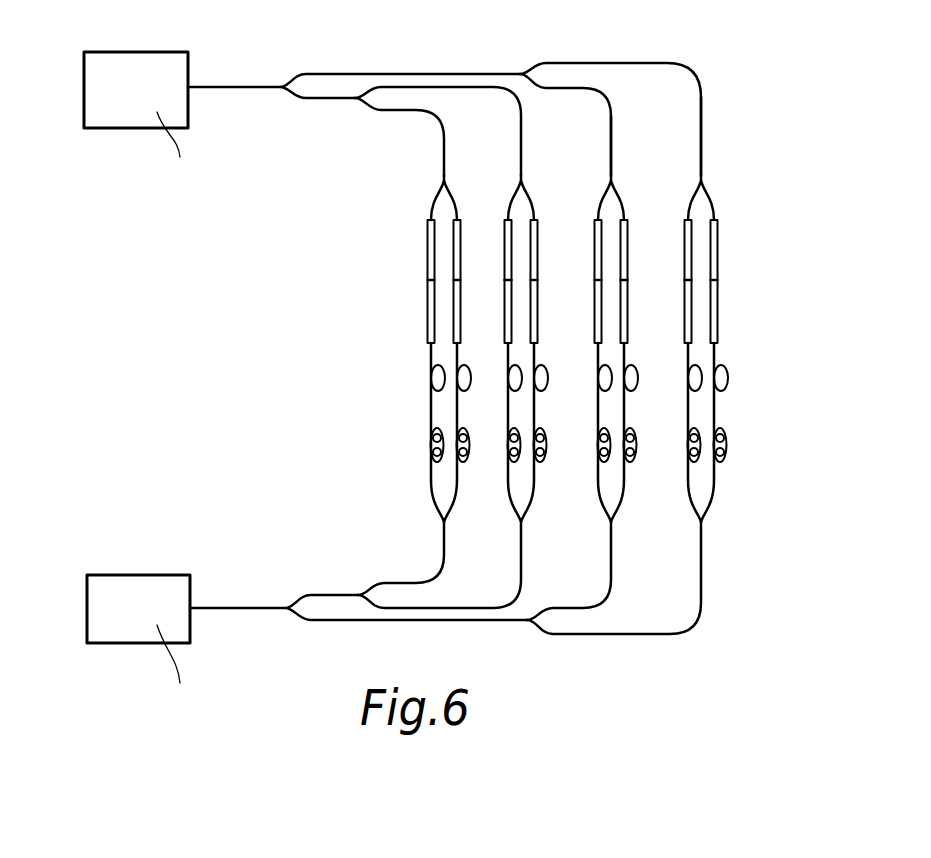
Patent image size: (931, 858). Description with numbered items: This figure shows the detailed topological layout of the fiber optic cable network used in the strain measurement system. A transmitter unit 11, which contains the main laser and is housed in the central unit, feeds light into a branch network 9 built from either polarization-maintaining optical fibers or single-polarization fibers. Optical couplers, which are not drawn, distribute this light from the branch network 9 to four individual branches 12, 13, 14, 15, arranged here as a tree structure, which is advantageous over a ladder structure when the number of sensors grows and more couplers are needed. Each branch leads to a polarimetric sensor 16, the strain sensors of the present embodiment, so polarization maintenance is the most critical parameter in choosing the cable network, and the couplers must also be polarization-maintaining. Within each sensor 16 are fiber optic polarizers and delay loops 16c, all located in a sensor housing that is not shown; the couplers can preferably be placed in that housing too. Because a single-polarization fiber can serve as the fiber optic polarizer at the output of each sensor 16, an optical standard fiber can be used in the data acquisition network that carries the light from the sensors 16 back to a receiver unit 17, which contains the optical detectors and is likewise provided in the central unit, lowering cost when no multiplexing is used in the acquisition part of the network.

The fiber optic network 9 is at (230, 86).
The transmitter unit 11 is at (120, 52).
The individual branch 12 is at (444, 148).
The individual branch 13 is at (521, 144).
The individual branch 14 is at (611, 142).
The individual branch 15 is at (701, 139).
The polarimetric sensor 16 is at (503, 270).
The delay loops 16c is at (431, 455).
The receiver unit 17 is at (130, 575).